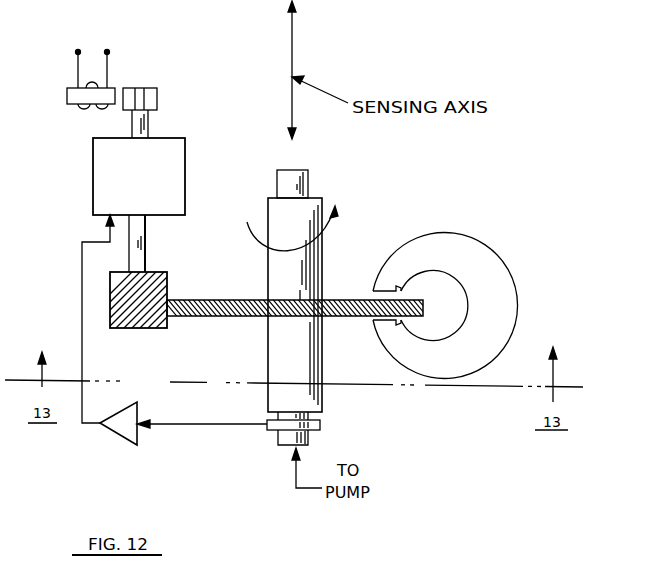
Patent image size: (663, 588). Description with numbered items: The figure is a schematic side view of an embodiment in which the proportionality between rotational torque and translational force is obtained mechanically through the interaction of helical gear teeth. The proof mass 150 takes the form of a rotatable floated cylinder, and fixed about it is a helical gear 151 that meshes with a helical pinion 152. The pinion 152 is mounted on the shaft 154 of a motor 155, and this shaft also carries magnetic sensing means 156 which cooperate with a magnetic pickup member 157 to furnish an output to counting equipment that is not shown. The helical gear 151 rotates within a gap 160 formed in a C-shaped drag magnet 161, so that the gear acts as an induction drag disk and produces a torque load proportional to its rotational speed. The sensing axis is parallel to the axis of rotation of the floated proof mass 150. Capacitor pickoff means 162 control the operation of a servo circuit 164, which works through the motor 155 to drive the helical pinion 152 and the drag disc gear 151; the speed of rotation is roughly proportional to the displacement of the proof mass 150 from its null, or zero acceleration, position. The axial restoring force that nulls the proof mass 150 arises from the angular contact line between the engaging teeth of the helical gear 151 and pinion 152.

The proof mass 150 is at (318, 372).
The helical gear 151 is at (210, 316).
The helical pinion 152 is at (152, 290).
The shaft 154 is at (137, 244).
The motor 155 is at (172, 163).
The magnetic sensing means 156 is at (130, 88).
The magnetic pickup member 157 is at (83, 92).
The gap 160 is at (378, 296).
The drag magnet 161 is at (482, 350).
The capacitor pickoff means 162 is at (260, 437).
The servo circuit 164 is at (121, 418).